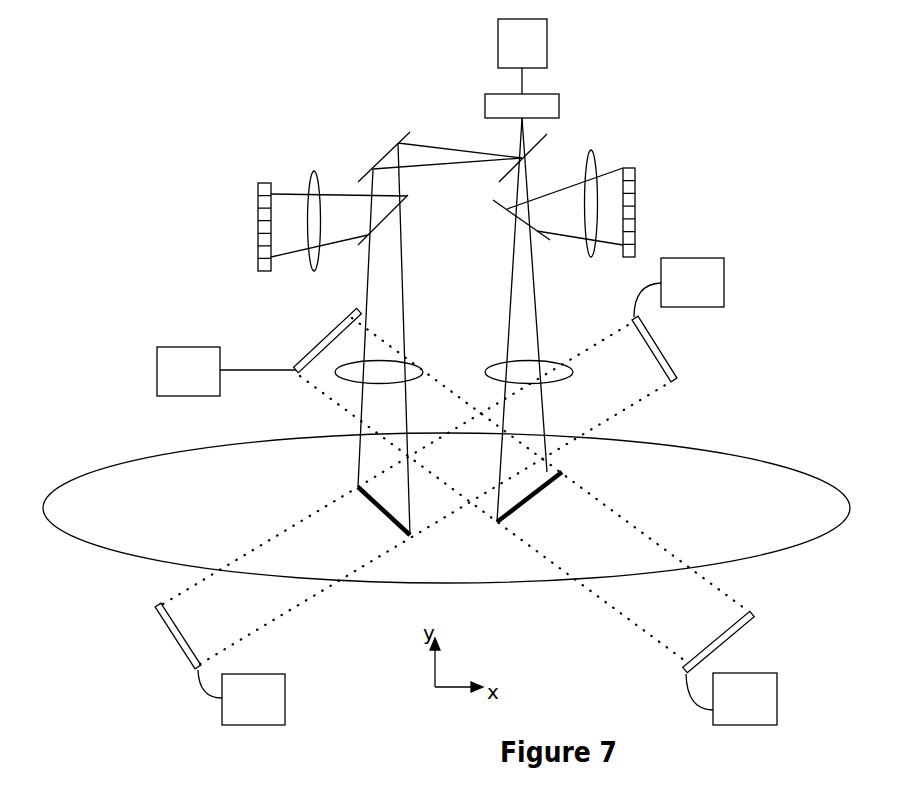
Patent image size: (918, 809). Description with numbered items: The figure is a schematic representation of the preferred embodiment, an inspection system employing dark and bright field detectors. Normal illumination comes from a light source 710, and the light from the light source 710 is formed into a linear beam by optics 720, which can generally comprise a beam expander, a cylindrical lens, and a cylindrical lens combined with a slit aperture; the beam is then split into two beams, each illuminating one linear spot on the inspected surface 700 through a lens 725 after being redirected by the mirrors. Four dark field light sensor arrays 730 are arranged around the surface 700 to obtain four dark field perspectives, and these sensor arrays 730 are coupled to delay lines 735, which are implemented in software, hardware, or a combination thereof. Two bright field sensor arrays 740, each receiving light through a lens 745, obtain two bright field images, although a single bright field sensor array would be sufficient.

The wafer / substrate 700 is at (176, 539).
The light source 710 is at (522, 53).
The optics 720 is at (535, 107).
The focusing lens 725 is at (522, 368).
The detector 730 is at (336, 323).
The delay lines 735 is at (215, 389).
The detector array 740 is at (265, 201).
The collection lens 745 is at (320, 182).